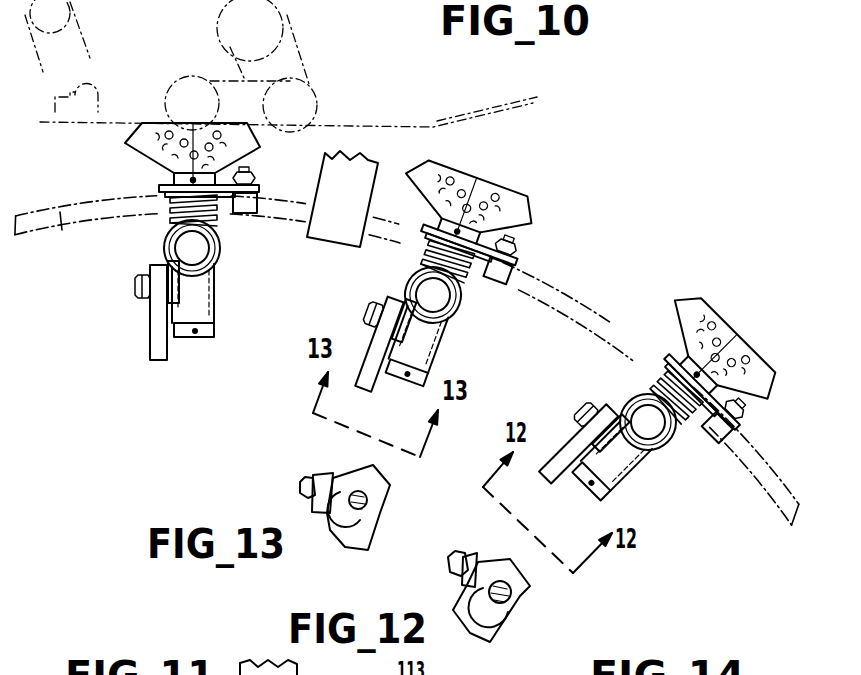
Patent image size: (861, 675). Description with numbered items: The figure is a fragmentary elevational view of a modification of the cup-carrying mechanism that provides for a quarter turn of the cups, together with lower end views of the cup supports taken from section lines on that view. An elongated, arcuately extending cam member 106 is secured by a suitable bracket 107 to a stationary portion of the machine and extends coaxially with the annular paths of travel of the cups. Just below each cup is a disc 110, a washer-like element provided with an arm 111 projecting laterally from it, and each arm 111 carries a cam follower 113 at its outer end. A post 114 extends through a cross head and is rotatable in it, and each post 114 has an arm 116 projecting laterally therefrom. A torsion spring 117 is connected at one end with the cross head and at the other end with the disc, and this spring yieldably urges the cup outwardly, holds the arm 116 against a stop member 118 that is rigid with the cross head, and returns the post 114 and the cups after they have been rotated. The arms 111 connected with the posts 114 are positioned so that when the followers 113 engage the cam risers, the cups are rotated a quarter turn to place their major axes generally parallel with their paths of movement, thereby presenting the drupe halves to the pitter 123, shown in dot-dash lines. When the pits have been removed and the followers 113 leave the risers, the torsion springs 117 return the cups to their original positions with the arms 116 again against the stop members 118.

In FIG. 10, the cam member 106 is at (582, 303).
In FIG. 10, the bracket 107 is at (365, 193).
In FIG. 10, the disc 110 is at (522, 226).
In FIG. 10, the arm 111 is at (485, 258).
In FIG. 10, the cam follower 113 is at (245, 212).
In FIG. 10, the post 114 is at (203, 288).
In FIG. 10, the arm 116 is at (574, 488).
In FIG. 13, the arm 116 is at (392, 489).
In FIG. 12, the arm 116 is at (487, 553).
In FIG. 10, the torsion spring 117 is at (421, 251).
In FIG. 10, the stop member 118 is at (366, 375).
In FIG. 12, the stop member 118 is at (452, 580).
In FIG. 10, the pitter 123 is at (322, 78).